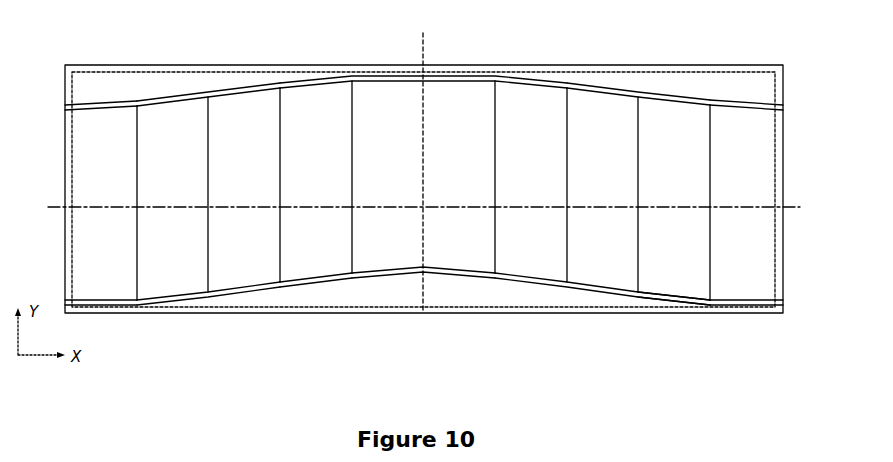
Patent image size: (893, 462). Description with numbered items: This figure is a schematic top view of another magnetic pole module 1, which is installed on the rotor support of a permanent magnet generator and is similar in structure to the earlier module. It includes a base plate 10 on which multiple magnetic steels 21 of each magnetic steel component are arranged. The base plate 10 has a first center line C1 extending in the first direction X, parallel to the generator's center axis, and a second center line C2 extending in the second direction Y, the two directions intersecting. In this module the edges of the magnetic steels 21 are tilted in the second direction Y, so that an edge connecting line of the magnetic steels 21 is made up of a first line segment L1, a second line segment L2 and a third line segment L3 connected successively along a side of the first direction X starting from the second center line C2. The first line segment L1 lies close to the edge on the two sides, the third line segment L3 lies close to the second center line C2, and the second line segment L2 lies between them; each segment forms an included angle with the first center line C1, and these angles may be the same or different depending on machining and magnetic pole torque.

The base plate 10 is at (775, 80).
The magnetic steels 21 is at (447, 93).
The magnetic pole module 1 is at (441, 163).
The first center line C1 is at (93, 205).
The second center line C2 is at (425, 63).
The first line segment L1 is at (312, 77).
The second line segment L2 is at (197, 90).
The third line segment L3 is at (92, 102).